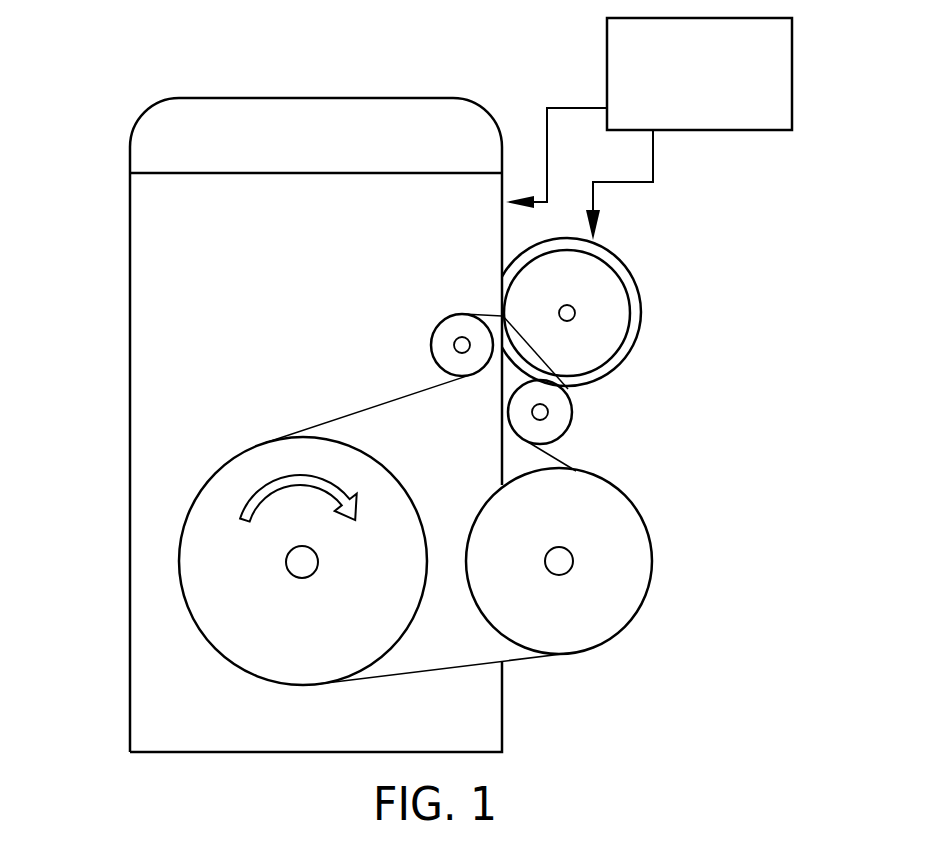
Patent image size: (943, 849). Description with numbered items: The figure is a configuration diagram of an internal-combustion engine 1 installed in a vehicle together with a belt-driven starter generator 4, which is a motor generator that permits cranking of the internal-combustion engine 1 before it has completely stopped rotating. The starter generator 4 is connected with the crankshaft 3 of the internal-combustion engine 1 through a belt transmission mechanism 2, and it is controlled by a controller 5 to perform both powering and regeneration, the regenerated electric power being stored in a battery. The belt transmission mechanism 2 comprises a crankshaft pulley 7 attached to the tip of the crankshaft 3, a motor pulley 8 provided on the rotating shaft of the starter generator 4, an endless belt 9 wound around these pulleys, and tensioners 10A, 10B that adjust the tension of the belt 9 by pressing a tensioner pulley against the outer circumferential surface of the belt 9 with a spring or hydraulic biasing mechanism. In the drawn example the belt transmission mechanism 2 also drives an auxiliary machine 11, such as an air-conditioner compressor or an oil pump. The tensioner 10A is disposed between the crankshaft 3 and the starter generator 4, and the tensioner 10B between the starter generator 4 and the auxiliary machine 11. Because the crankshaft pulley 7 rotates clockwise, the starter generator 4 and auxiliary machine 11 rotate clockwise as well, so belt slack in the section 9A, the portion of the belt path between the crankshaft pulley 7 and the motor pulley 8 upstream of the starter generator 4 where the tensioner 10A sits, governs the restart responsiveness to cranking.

The internal-combustion engine 1 is at (140, 348).
The belt transmission mechanism 2 is at (342, 381).
The crankshaft 3 is at (300, 578).
The starter generator 4 is at (632, 273).
The controller 5 is at (793, 74).
The crankshaft pulley 7 is at (192, 558).
The motor pulley 8 is at (617, 315).
The endless belt 9 is at (448, 668).
The section of the belt path 9A is at (315, 425).
The tensioner 10A is at (445, 330).
The tensioner 10B is at (557, 412).
The auxiliary machine 11 is at (640, 557).